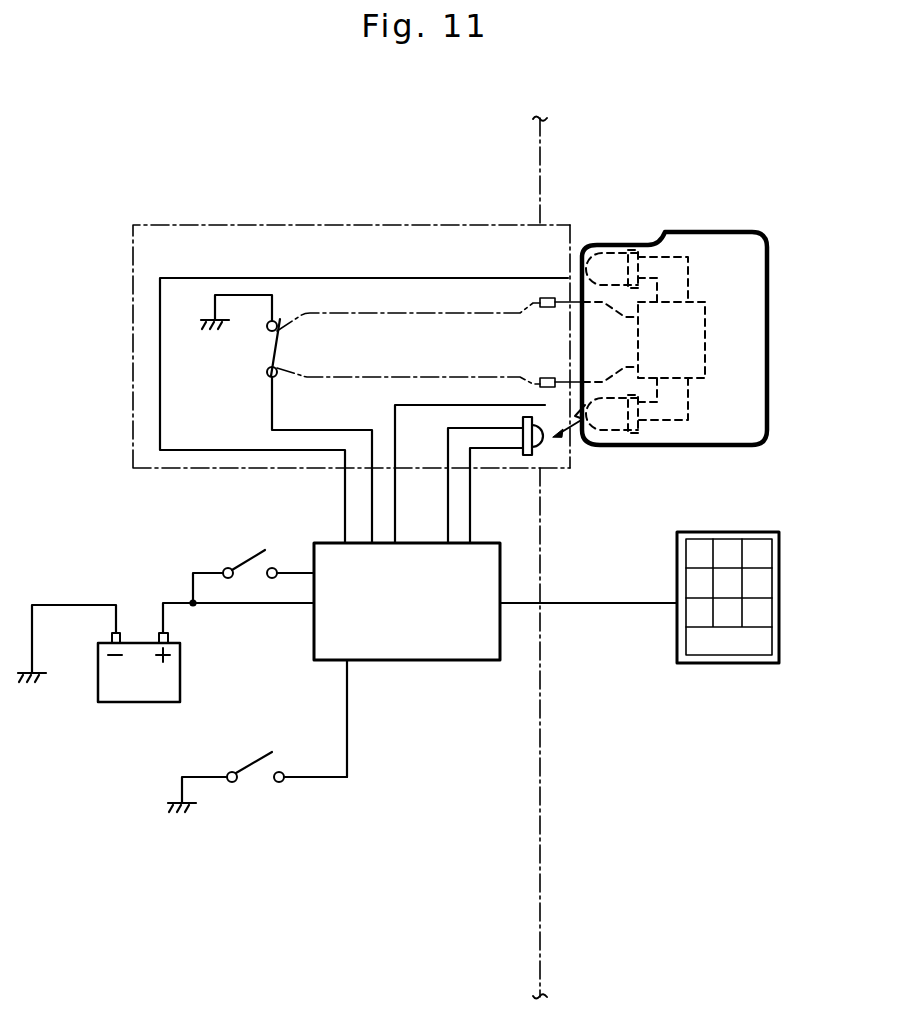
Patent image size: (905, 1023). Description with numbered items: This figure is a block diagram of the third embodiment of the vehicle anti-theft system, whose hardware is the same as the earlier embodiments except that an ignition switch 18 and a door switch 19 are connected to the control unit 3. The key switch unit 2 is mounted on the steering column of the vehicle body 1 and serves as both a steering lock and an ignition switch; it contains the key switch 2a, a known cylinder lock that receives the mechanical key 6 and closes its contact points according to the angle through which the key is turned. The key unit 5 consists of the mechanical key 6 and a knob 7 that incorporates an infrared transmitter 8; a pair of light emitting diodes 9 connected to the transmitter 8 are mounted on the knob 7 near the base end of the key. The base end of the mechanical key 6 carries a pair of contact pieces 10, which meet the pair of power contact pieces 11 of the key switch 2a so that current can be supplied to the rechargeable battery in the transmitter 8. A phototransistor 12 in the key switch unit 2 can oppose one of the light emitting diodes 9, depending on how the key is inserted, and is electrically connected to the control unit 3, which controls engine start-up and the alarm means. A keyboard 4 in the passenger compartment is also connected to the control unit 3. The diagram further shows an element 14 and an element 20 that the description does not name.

The vehicle body 1 is at (543, 152).
The key switch unit 2 is at (267, 225).
The key switch 2a is at (572, 235).
The control unit 3 is at (447, 660).
The keyboard 4 is at (710, 663).
The key unit 5 is at (693, 339).
The mechanical key 6 is at (414, 305).
The knob 7 is at (713, 232).
The infrared transmitter 8 is at (705, 348).
The light emitting diodes 9 is at (615, 253).
The contact pieces 10 is at (544, 377).
The power contact pieces 11 is at (548, 297).
The phototransistor 12 is at (543, 443).
The switch 14 is at (265, 350).
The ignition switch 18 is at (248, 560).
The door switch 19 is at (256, 765).
The battery 20 is at (183, 687).